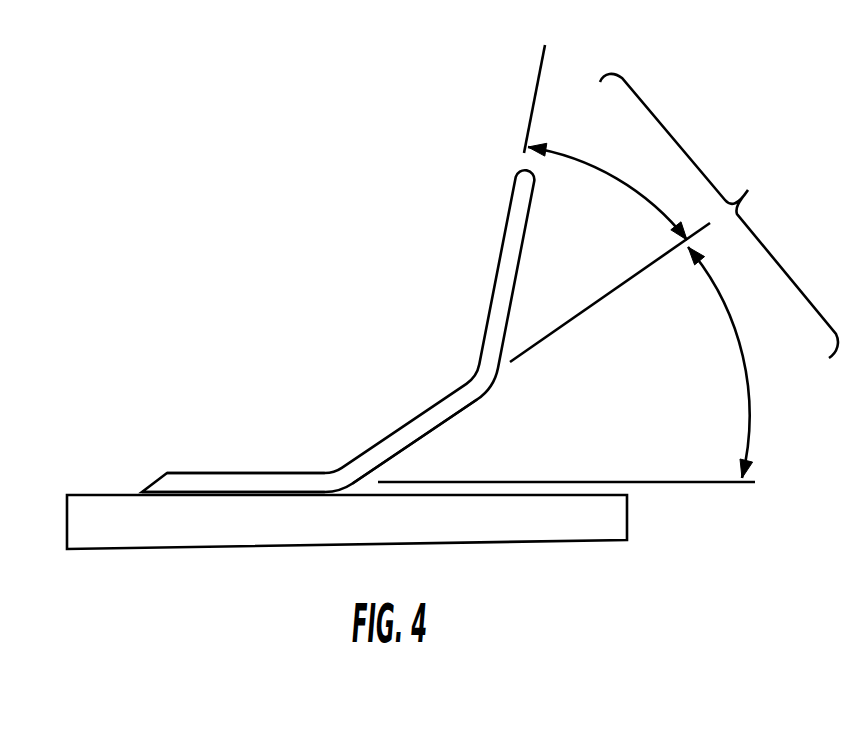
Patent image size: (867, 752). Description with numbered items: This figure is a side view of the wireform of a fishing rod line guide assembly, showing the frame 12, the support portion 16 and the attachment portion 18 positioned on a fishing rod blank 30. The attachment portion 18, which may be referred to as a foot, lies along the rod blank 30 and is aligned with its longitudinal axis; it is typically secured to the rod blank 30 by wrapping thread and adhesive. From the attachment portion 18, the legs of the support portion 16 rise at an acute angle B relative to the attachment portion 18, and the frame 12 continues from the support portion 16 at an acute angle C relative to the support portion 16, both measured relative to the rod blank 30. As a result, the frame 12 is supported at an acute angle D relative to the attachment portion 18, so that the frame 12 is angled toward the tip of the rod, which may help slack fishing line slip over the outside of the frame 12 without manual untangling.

The wire frame 12 is at (497, 283).
The support portion 16 is at (423, 440).
The attachment portion 18 is at (223, 473).
The fishing rod blank 30 is at (112, 503).
The acute angle B is at (738, 355).
The acute angle C is at (620, 186).
The acute angle D is at (719, 216).